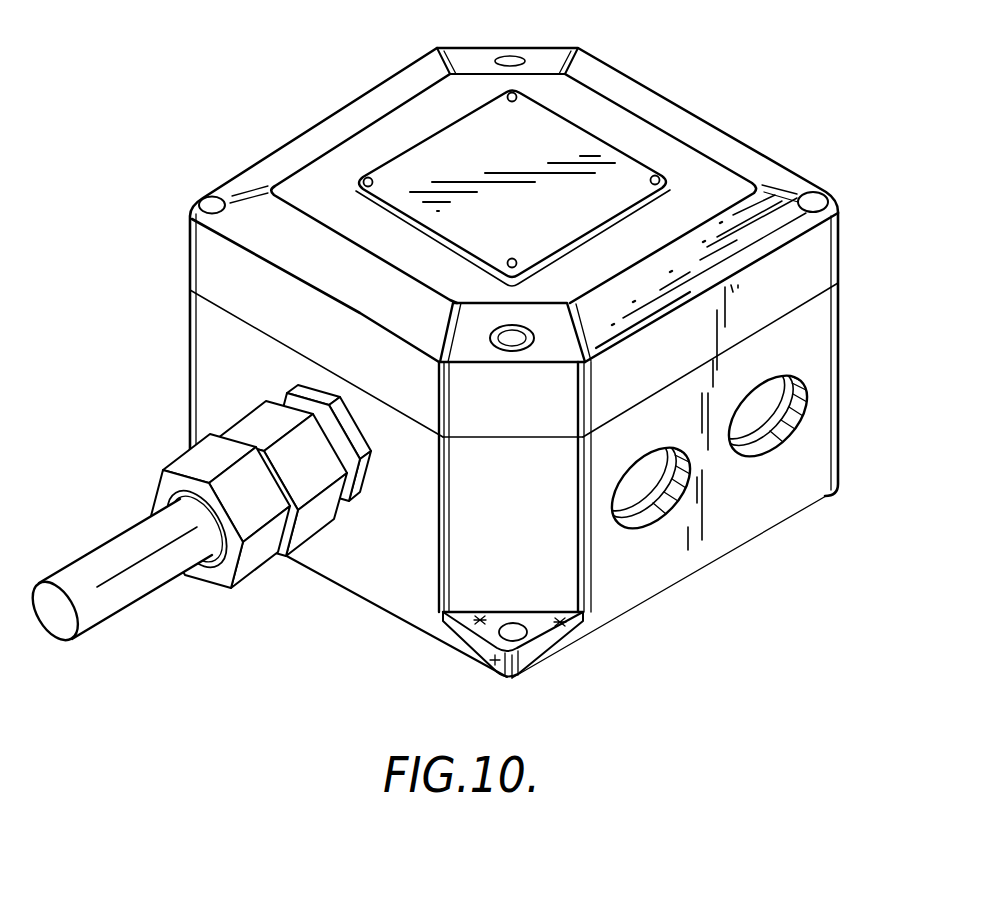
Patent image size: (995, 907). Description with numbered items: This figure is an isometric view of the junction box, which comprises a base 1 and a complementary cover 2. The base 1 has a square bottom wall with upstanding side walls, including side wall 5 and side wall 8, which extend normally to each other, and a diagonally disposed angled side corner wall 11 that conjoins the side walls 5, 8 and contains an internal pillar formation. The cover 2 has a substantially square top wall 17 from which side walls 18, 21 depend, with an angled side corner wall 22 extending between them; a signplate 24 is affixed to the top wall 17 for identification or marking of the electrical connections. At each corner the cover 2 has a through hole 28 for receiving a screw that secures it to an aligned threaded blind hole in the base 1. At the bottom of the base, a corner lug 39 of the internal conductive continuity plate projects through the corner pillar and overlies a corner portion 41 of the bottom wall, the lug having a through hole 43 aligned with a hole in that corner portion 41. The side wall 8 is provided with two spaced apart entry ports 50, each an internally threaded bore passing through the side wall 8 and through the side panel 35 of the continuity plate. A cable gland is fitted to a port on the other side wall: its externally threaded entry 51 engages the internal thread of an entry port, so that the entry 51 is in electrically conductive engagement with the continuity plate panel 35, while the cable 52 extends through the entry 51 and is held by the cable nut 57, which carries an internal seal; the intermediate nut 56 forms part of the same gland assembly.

The base 1 is at (226, 346).
The cover 2 is at (625, 136).
The side wall 5 is at (413, 587).
The side wall 8 is at (722, 533).
The angled side corner wall 11 is at (484, 541).
The top wall 17 is at (672, 152).
The side wall 18 is at (216, 272).
The side wall 21 is at (780, 292).
The angled side corner wall 22 is at (490, 426).
The signplate 24 is at (553, 137).
The through hole 28 is at (206, 199).
The side panel 35 is at (782, 457).
The corner lug 39 is at (562, 624).
The corner portion 41 is at (492, 661).
The through hole 43 is at (522, 634).
The entry port 50 is at (660, 530).
The entry 51 is at (360, 503).
The cable 52 is at (150, 567).
The gland nut 56 is at (307, 527).
The cable nut 57 is at (252, 568).